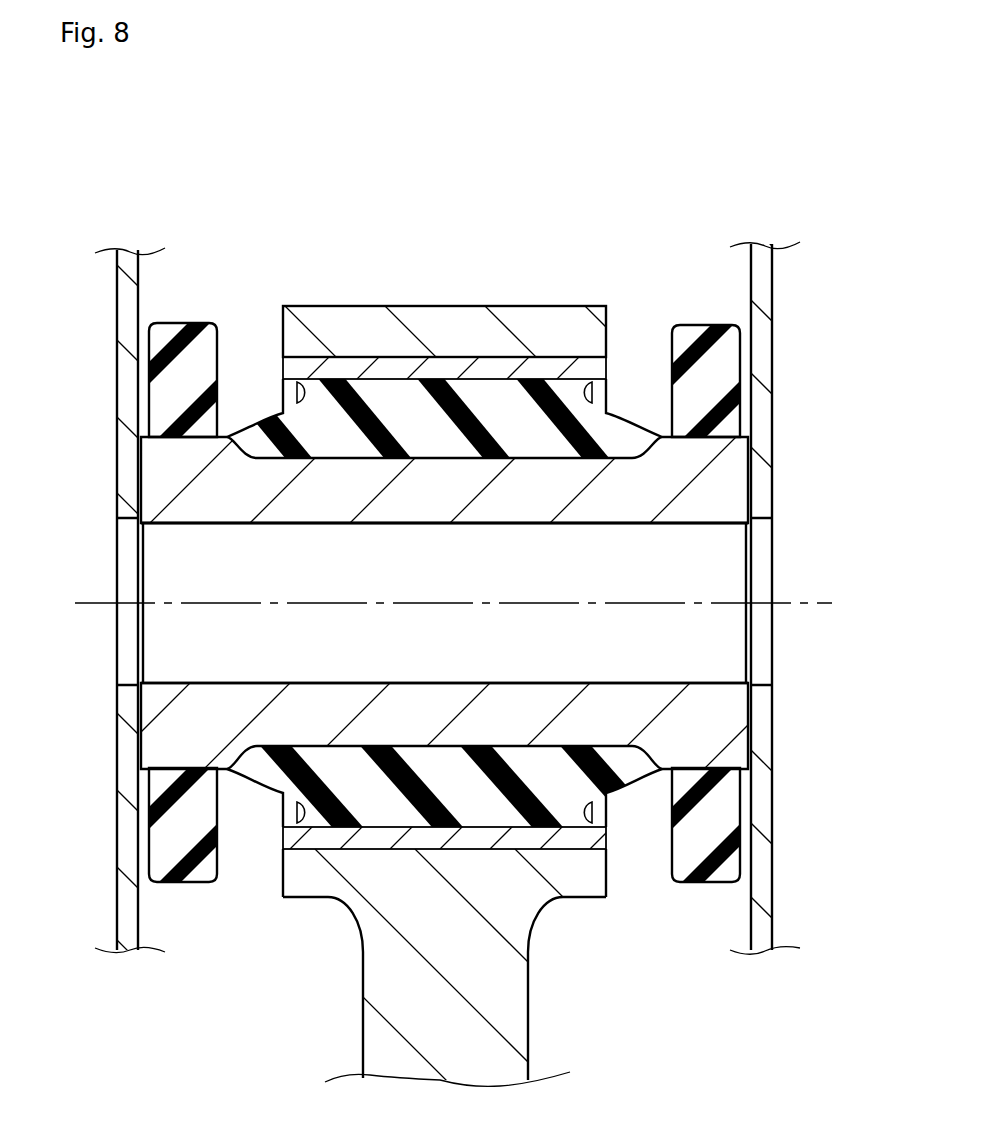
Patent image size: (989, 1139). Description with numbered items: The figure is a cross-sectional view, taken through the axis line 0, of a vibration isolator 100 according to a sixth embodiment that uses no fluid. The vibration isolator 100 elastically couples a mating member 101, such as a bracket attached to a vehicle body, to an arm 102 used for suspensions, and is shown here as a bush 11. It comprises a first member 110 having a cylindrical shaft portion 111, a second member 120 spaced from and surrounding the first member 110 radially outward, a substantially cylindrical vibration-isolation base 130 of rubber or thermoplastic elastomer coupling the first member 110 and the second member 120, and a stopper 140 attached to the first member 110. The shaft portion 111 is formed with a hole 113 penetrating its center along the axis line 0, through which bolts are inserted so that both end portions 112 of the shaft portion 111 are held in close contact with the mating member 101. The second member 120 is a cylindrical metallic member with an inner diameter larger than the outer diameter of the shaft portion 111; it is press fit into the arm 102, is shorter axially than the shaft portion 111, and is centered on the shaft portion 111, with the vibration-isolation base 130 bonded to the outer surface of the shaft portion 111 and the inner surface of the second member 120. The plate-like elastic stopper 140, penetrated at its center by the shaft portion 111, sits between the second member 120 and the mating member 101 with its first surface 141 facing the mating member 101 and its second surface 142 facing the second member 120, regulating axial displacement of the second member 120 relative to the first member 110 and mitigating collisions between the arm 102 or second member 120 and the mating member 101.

The vibration isolator 100 is at (525, 237).
The bush 11 is at (259, 358).
The mating member 101 is at (125, 296).
The arm 102 is at (530, 990).
The axis line 0 is at (814, 602).
The first member 110 is at (108, 538).
The shaft portion 111 is at (494, 513).
The end portions 112 is at (150, 474).
The hole 113 is at (576, 524).
The second member 120 is at (345, 370).
The vibration-isolation base 130 is at (325, 760).
The stopper 140 is at (148, 393).
The first surface 141 is at (745, 800).
The second surface 142 is at (672, 850).